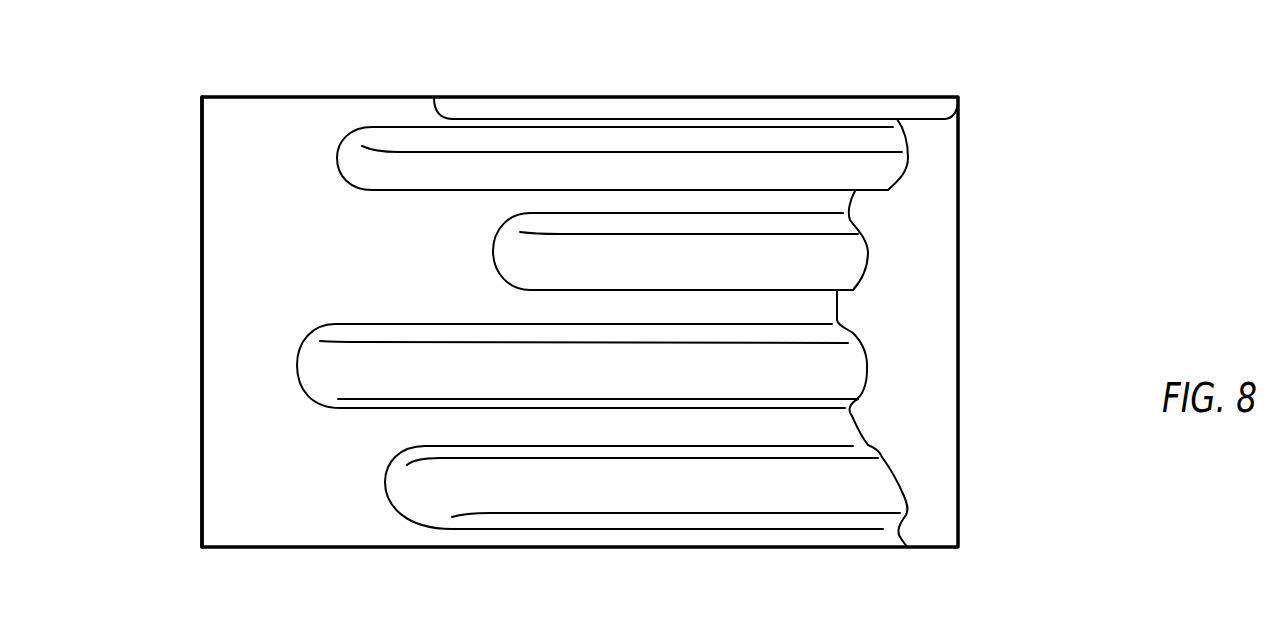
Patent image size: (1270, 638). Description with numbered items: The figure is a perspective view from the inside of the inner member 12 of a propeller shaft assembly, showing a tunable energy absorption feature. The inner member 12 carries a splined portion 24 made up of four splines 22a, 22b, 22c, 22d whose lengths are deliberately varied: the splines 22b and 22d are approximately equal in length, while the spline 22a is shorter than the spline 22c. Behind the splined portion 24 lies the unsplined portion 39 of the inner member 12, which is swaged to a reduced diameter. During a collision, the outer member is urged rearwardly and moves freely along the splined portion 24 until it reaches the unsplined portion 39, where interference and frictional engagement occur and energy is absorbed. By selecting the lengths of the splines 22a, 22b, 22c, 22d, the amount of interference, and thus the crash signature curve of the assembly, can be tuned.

The inner member 12 is at (276, 47).
The splined portion 24 is at (562, 82).
The spline 22a is at (877, 483).
The spline 22b is at (848, 368).
The spline 22c is at (847, 265).
The spline 22d is at (880, 163).
The unsplined portion 39 is at (228, 227).